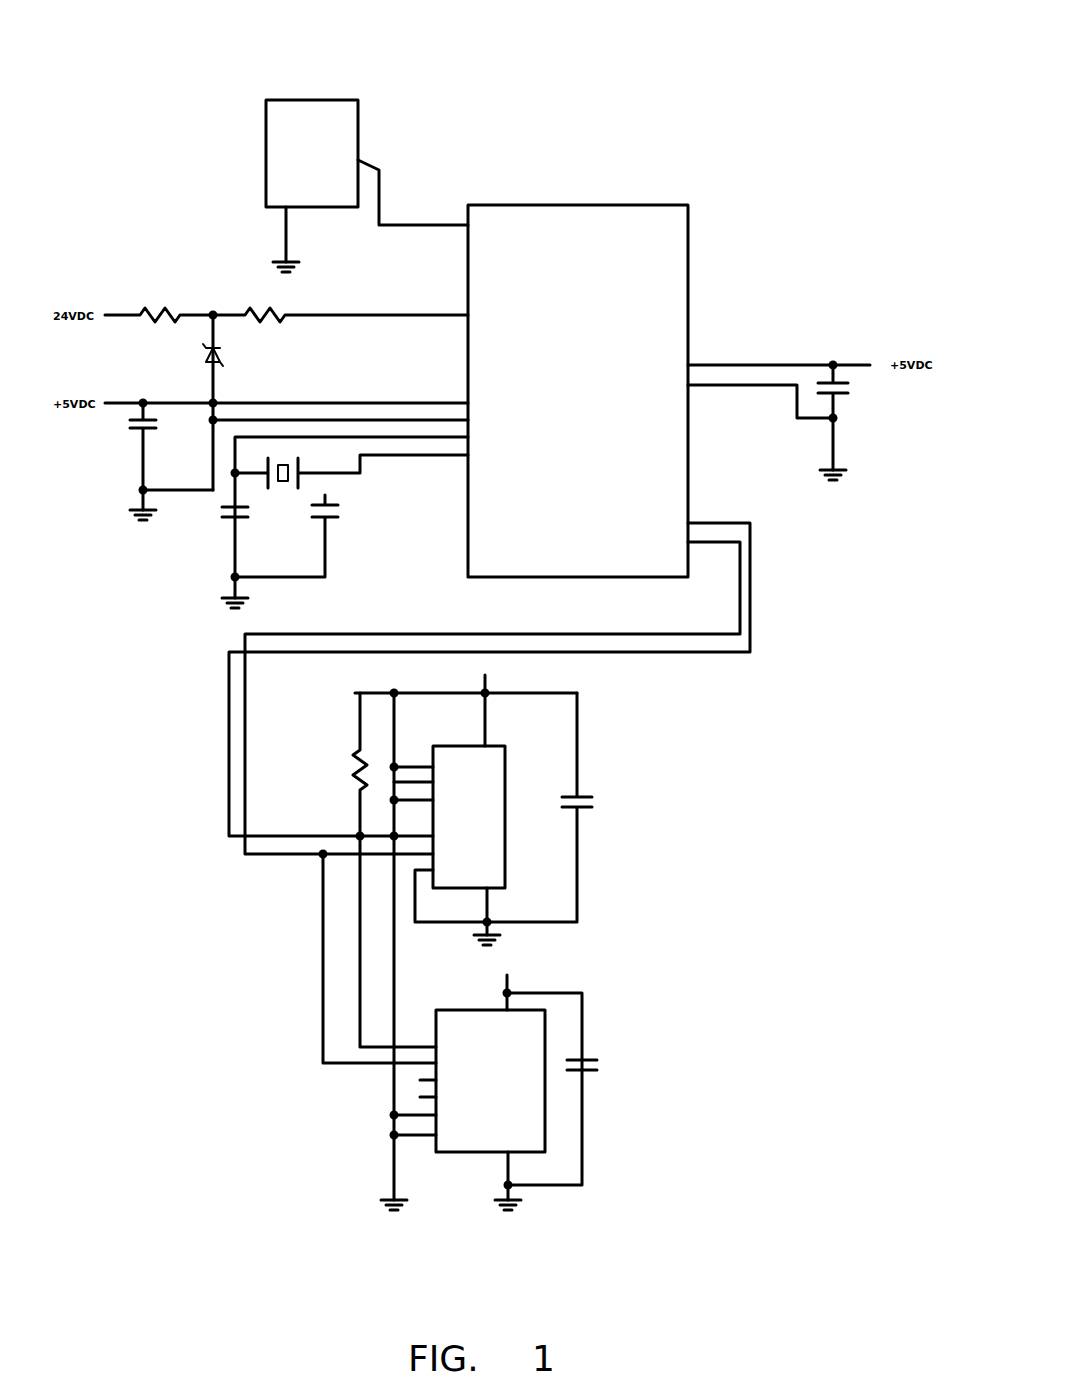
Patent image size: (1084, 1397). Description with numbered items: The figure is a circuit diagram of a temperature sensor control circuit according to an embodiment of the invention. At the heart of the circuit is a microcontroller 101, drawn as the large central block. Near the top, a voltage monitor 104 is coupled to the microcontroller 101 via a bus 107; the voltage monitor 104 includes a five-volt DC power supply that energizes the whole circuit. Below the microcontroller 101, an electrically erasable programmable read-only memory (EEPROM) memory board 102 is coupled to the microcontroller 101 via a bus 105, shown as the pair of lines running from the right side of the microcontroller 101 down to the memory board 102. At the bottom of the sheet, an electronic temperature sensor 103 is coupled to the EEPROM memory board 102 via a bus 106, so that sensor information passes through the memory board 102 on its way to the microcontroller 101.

The microcontroller 101 is at (677, 205).
The EEPROM memory board 102 is at (507, 770).
The electronic temperature sensor 103 is at (465, 1153).
The voltage monitor 104 is at (360, 127).
The bus 105 is at (742, 590).
The bus 106 is at (362, 1003).
The bus 107 is at (403, 222).